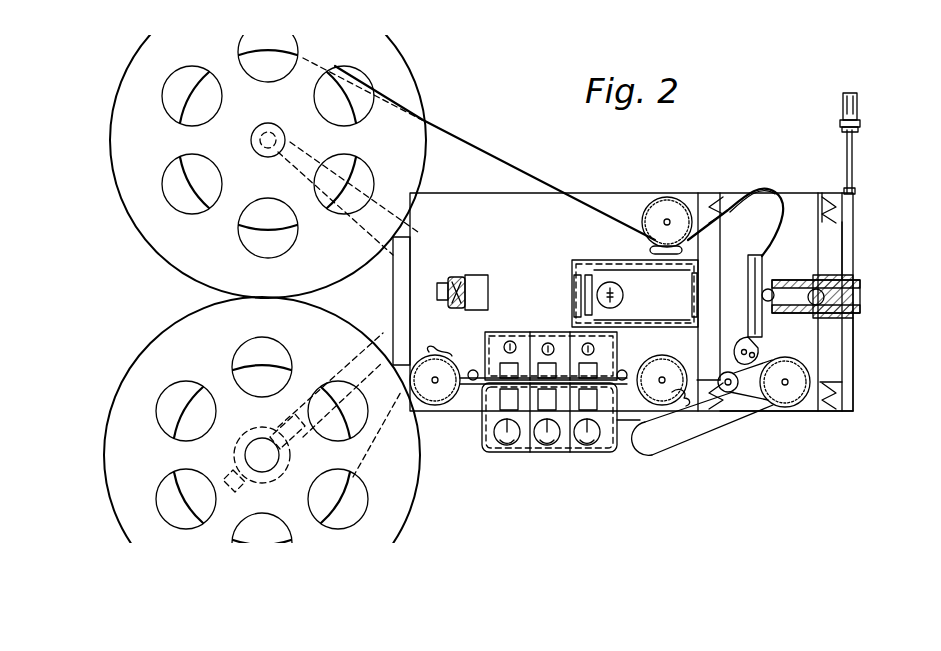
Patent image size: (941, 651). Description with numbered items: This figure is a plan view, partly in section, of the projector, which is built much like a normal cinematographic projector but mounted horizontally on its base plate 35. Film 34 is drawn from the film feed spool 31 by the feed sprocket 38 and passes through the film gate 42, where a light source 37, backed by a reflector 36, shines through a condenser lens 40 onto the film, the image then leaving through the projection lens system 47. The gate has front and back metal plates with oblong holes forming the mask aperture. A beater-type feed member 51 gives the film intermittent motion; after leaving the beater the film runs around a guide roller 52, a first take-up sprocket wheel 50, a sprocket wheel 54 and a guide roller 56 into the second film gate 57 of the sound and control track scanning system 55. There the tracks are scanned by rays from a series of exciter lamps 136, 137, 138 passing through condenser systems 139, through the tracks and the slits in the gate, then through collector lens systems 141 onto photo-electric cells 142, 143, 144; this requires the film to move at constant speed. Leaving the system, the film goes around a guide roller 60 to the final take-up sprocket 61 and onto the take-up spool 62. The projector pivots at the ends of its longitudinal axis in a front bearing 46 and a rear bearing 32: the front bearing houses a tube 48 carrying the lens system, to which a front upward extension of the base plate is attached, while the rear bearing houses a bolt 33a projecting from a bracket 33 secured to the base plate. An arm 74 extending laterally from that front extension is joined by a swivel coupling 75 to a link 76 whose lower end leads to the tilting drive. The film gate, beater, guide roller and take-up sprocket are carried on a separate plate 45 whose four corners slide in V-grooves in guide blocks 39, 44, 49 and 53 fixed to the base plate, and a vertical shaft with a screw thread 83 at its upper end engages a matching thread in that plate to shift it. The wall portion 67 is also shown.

The film feed spool 31 is at (402, 90).
The rear bearing 32 is at (450, 275).
The bracket 33 is at (483, 290).
The bolt 33a is at (460, 277).
The film 34 is at (478, 147).
The base plate 35 is at (583, 195).
The reflector 36 is at (580, 273).
The light source 37 is at (617, 283).
The feed sprocket 38 is at (657, 207).
The guide block 39 is at (713, 195).
The condenser lens 40 is at (693, 296).
The film gate 42 is at (760, 253).
The guide block 44 is at (837, 197).
The separate plate 45 is at (797, 233).
The front bearing 46 is at (820, 280).
The projection lens system 47 is at (855, 288).
The tube 48 is at (852, 316).
The guide block 49 is at (848, 412).
The first take-up sprocket wheel 50 is at (795, 392).
The feed member 51 is at (752, 347).
The guide roller 52 is at (735, 390).
The guide block 53 is at (703, 392).
The sprocket wheel 54 is at (674, 396).
The sound and control track scanning system 55 is at (518, 453).
The guide roller 56 is at (663, 406).
The second film gate 57 is at (643, 422).
The guide roller 60 is at (471, 382).
The final take-up sprocket 61 is at (435, 386).
The take-up spool 62 is at (388, 497).
The casing wall 67 is at (845, 368).
The arm 74 is at (853, 160).
The swivel coupling 75 is at (843, 117).
The link 76 is at (848, 93).
The screw thread 83 is at (768, 288).
The exciter lamp 136 is at (594, 349).
The exciter lamp 137 is at (548, 343).
The exciter lamp 138 is at (510, 341).
The condenser systems 139 is at (500, 365).
The collector lens systems 141 is at (510, 405).
The photo-electric cell 142 is at (590, 440).
The photo-electric cell 143 is at (547, 440).
The photo-electric cell 144 is at (500, 438).